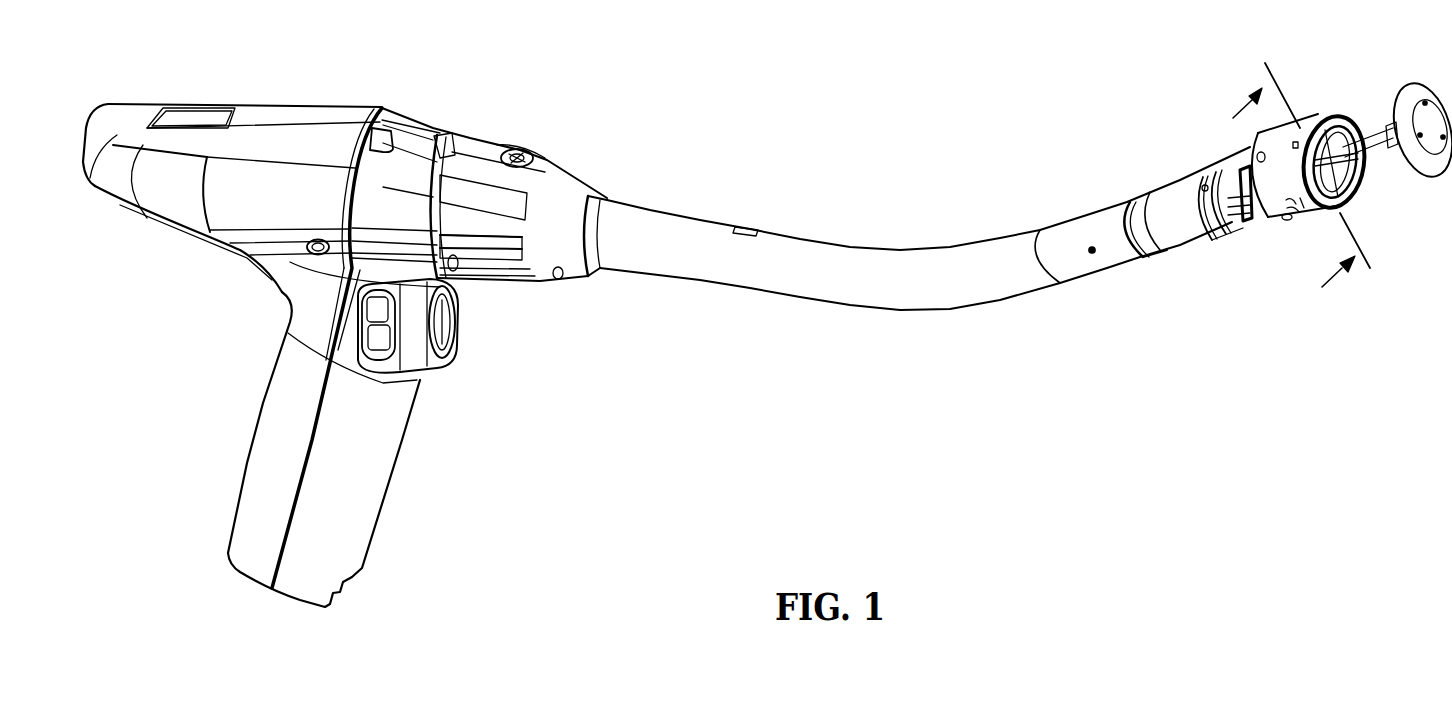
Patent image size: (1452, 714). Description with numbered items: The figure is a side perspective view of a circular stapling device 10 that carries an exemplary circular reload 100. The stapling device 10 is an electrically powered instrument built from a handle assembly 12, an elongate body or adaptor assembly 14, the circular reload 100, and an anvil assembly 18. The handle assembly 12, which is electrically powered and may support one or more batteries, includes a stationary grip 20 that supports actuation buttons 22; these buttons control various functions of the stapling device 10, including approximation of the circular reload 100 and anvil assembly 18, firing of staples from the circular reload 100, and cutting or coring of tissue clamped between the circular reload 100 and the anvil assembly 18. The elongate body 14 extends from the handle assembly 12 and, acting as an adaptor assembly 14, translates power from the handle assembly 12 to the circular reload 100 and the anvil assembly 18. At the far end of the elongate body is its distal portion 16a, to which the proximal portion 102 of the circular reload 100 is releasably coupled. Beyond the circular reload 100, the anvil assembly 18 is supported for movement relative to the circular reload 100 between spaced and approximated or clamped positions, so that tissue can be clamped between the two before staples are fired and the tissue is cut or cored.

The circular stapling device 10 is at (769, 85).
The handle assembly 12 is at (202, 359).
The elongate body or adaptor assembly 14 is at (784, 171).
The distal portion of the elongate body 16a is at (1197, 247).
The anvil assembly 18 is at (1432, 185).
The stationary grip 20 is at (384, 552).
The actuation buttons 22 is at (442, 374).
The circular reload 100 is at (1313, 91).
The proximal portion of the circular reload 102 is at (1253, 231).